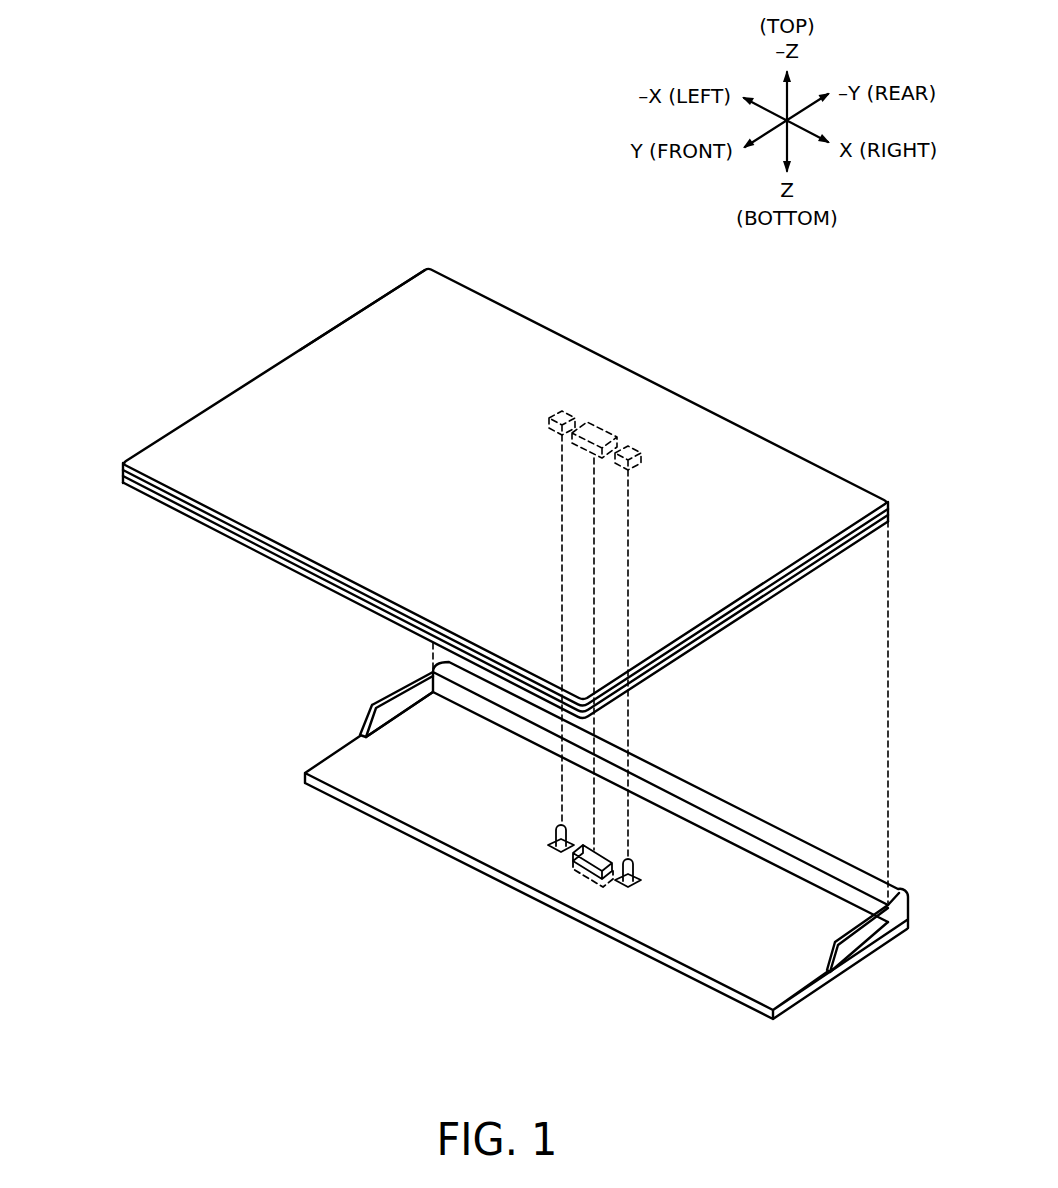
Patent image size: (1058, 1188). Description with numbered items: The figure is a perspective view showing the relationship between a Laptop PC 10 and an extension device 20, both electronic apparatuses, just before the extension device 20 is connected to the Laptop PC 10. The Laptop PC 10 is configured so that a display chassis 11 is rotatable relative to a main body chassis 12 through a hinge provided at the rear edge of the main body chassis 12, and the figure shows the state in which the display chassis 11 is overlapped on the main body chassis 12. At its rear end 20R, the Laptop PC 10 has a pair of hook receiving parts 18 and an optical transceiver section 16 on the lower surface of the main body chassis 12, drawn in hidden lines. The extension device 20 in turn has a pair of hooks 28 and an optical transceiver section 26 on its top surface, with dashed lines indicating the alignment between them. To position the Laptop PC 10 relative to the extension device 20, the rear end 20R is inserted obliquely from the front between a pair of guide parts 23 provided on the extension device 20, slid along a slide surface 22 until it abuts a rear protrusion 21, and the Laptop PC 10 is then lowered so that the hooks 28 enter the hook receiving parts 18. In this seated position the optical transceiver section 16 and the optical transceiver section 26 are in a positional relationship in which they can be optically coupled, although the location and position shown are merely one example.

The Laptop PC 10 is at (43, 367).
The display chassis 11 is at (148, 425).
The main body chassis 12 is at (135, 506).
The optical transceiver section 16 is at (593, 420).
The hook receiving parts 18 is at (566, 408).
The extension device 20 is at (913, 872).
The rear end 20R is at (481, 313).
The rear protrusion 21 is at (688, 790).
The slide surface 22 is at (433, 802).
The guide parts 23 is at (386, 707).
The optical transceiver section 26 is at (590, 883).
The hooks 28 is at (551, 846).